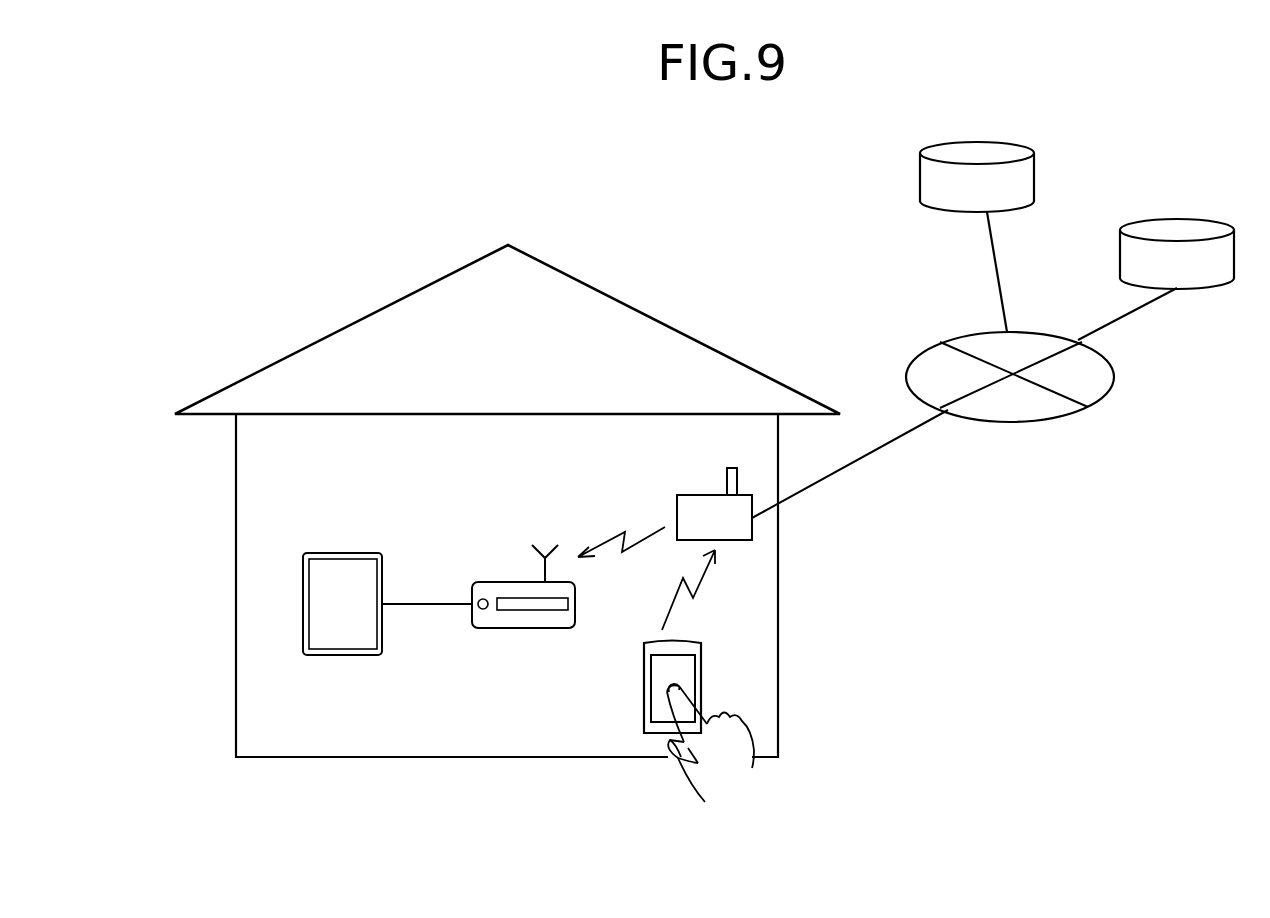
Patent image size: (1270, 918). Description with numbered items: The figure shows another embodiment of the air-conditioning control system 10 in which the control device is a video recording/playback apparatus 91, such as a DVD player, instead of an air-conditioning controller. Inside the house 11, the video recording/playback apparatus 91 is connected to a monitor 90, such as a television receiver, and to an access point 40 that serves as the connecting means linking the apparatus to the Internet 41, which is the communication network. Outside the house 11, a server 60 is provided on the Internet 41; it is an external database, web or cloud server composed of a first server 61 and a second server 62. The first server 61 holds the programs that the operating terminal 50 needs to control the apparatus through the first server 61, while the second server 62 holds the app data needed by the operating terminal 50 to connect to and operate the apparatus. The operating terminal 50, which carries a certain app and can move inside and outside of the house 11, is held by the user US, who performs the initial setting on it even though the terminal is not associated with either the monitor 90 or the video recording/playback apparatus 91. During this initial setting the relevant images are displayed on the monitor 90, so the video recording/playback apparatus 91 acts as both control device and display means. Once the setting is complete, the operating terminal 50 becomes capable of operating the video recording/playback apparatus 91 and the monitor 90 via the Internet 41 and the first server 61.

The air-conditioning control system 10 is at (888, 643).
The house 11 is at (373, 315).
The access point 40 is at (752, 528).
The Internet 41 is at (1010, 422).
The operating terminal 50 is at (644, 686).
The server 60 is at (1077, 207).
The first server 61 is at (1177, 225).
The second server 62 is at (1035, 172).
The monitor 90 is at (337, 655).
The video recording/playback apparatus 91 is at (526, 628).
The user US is at (752, 768).